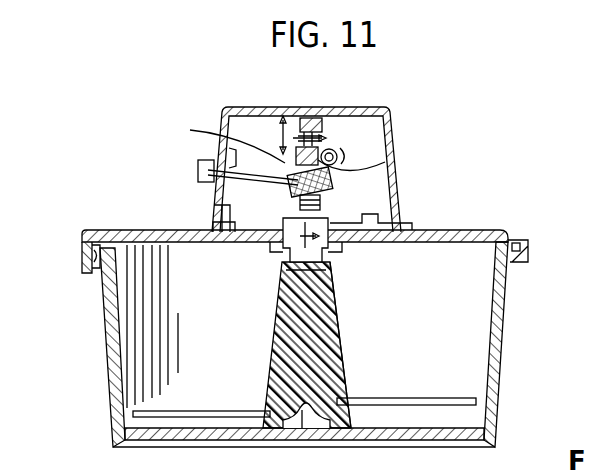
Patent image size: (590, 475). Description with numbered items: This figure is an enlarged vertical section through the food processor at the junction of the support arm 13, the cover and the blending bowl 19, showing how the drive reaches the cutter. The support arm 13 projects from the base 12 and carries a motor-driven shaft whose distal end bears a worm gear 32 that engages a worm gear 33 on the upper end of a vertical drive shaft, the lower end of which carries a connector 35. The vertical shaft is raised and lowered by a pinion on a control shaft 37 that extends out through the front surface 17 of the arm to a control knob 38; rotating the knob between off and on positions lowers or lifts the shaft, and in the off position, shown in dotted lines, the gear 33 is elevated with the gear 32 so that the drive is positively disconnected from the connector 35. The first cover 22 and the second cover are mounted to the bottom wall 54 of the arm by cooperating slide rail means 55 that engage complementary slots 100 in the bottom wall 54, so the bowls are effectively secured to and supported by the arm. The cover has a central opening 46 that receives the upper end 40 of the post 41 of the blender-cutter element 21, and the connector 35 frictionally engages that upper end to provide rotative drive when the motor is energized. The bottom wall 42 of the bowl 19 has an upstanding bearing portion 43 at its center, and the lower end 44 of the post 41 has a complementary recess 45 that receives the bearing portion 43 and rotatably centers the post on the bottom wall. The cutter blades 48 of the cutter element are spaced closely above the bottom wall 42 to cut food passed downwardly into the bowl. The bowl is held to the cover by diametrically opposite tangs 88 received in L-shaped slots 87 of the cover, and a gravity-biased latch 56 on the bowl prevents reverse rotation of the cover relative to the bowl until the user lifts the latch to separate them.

The base 12 is at (340, 170).
The support arm 13 is at (395, 148).
The front surface 17 is at (227, 108).
The blending bowl 19 is at (507, 322).
The blender-cutter element 21 is at (350, 362).
The first cover 22 is at (473, 232).
The worm gear 32 is at (345, 157).
The worm gear 33 is at (320, 118).
The connector 35 is at (290, 283).
The control shaft 37 is at (240, 182).
The control knob 38 is at (200, 172).
The upper end of post 40 is at (326, 268).
The post 41 is at (336, 330).
The bottom wall 42 is at (402, 443).
The bearing portion 43 is at (302, 438).
The lower end of post 44 is at (265, 377).
The recess 45 is at (301, 430).
The central opening 46 is at (288, 252).
The cutter blades 48 is at (438, 397).
The bottom wall 54 is at (385, 206).
The slide rail means 55 is at (388, 222).
The latch 56 is at (513, 250).
The L-shaped slot 87 is at (100, 280).
The tang 88 is at (85, 250).
The slot 100 is at (213, 198).